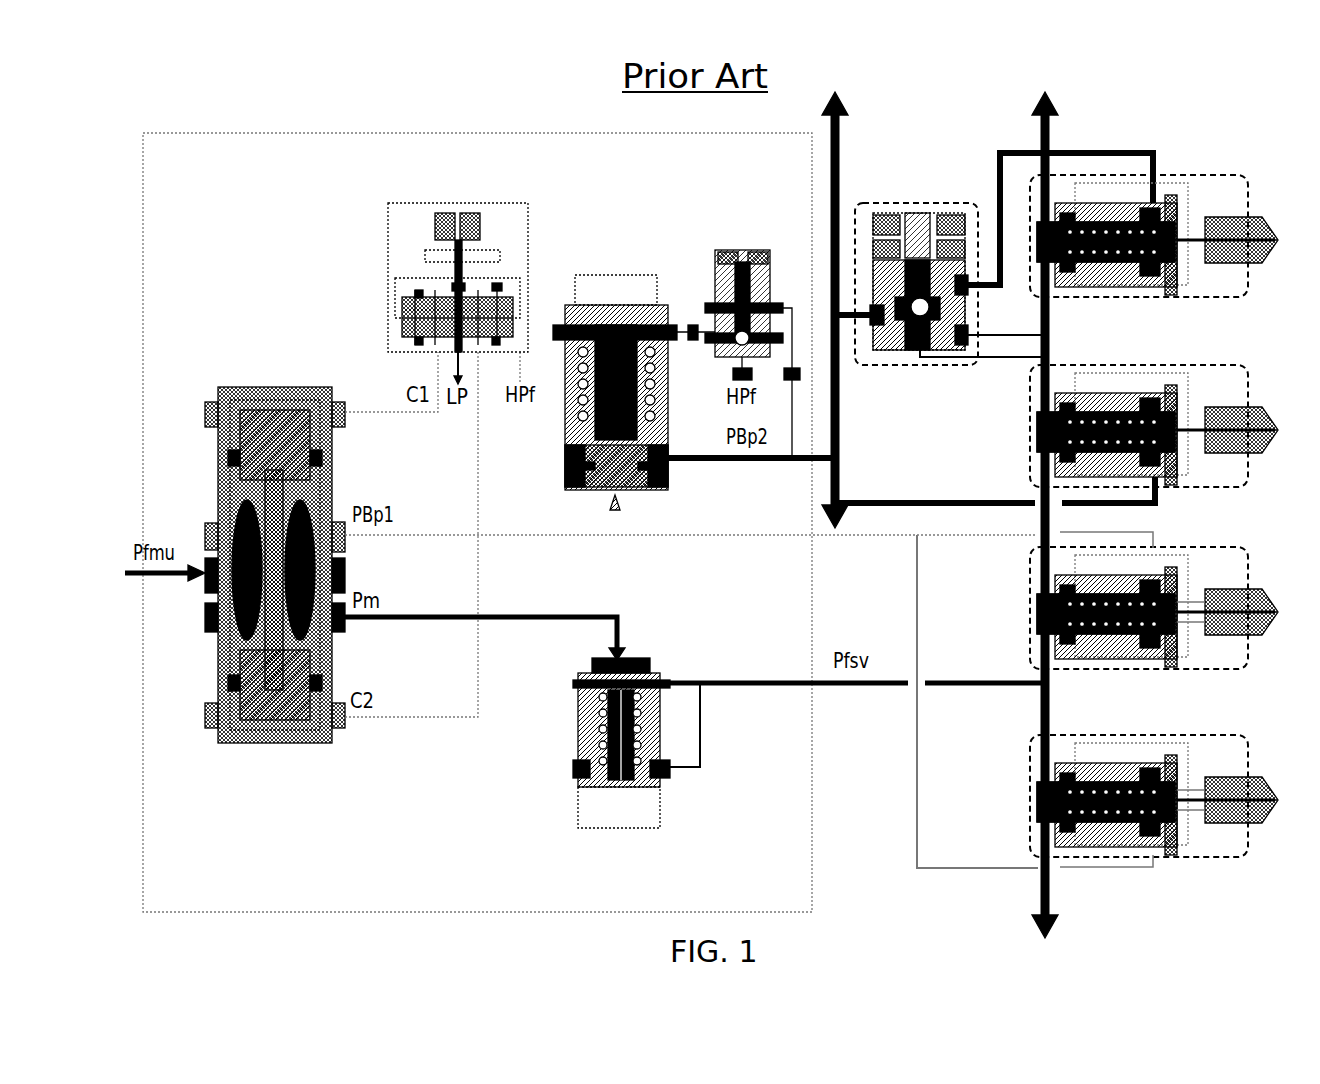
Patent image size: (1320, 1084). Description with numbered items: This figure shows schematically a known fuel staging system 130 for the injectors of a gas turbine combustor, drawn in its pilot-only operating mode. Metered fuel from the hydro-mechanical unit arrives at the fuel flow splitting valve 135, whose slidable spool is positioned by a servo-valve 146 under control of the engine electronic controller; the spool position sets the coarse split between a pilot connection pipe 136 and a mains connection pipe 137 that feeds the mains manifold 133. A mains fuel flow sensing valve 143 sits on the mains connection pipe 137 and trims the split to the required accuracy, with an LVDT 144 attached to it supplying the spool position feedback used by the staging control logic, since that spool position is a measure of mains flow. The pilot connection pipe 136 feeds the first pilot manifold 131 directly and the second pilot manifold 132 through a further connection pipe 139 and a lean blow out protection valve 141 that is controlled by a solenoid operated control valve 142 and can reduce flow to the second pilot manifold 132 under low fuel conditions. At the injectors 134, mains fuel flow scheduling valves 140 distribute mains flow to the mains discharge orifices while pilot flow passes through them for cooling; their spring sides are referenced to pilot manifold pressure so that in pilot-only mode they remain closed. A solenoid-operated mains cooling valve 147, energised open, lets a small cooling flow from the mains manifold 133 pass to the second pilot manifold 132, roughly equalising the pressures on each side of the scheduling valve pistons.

The staging system 130 is at (962, 88).
The first pilot manifold 131 is at (920, 785).
The second pilot manifold 132 is at (843, 420).
The mains manifold 133 is at (1057, 705).
The fuel injectors 134 is at (1215, 175).
The fuel flow splitting valve 135 is at (225, 455).
The pilot connection pipe 136 is at (507, 537).
The mains connection pipe 137 is at (383, 620).
The further connection pipe 139 is at (712, 462).
The mains fuel flow scheduling valves 140 is at (1112, 205).
The lean blow out protection valve 141 is at (562, 402).
The solenoid operated control valve 142 is at (718, 285).
The mains fuel flow sensing valve 143 is at (575, 740).
The LVDT 144 is at (642, 819).
The servo-valve 146 is at (497, 203).
The mains cooling valve 147 is at (918, 202).